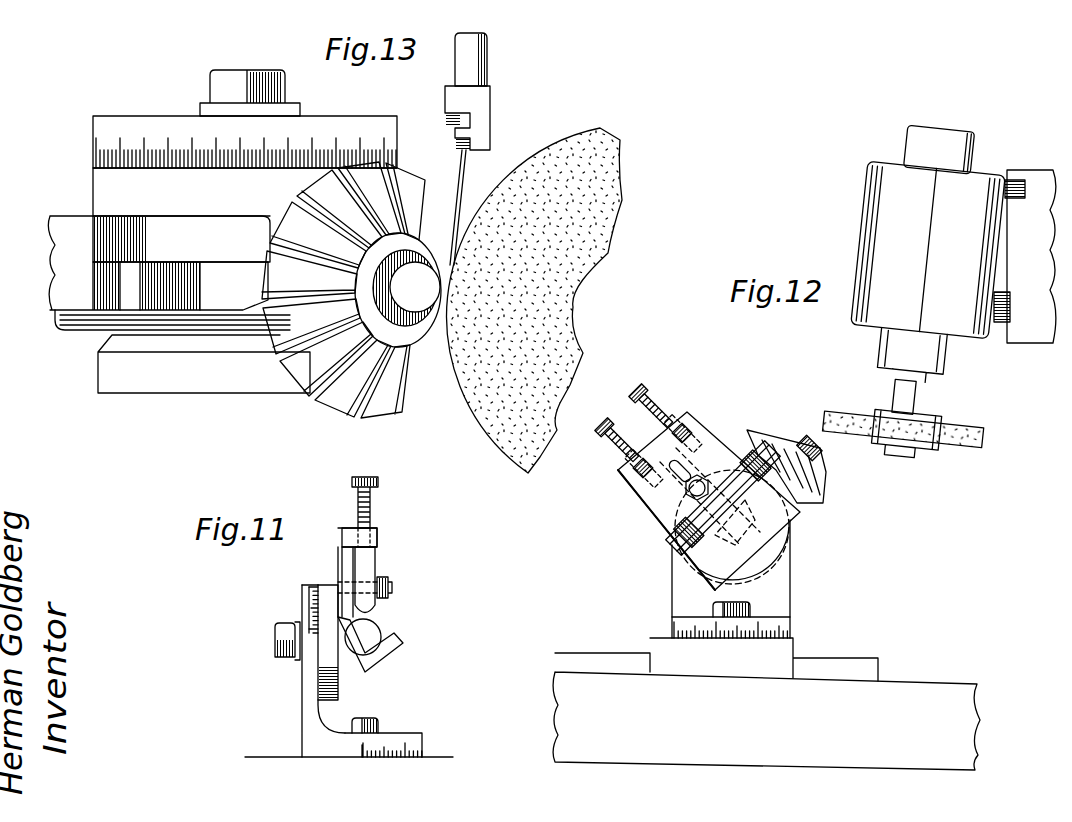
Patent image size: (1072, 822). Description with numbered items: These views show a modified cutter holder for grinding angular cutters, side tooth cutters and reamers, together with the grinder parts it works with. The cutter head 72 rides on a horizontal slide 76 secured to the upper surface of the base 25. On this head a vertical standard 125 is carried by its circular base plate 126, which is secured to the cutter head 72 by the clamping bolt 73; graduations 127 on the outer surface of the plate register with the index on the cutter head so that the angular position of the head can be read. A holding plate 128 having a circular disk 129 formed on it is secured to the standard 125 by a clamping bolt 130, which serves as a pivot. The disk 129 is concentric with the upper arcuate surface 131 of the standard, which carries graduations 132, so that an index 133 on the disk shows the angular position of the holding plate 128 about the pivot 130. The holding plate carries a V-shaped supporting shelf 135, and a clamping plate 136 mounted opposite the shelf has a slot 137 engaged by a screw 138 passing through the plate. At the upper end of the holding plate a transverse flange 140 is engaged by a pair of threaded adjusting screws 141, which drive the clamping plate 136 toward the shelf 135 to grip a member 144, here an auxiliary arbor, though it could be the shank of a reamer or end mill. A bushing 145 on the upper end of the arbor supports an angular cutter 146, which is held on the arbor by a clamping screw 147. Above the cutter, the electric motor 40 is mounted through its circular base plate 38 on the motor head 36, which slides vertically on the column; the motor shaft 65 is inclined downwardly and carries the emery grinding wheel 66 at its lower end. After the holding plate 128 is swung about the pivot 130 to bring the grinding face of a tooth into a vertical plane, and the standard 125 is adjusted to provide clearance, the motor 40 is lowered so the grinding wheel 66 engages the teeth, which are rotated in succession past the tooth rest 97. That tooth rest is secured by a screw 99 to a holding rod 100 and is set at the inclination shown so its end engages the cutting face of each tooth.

In FIG. 12, the base 25 is at (560, 704).
In FIG. 12, the motor head 36 is at (1022, 333).
In FIG. 12, the circular base plate 38 is at (1012, 183).
In FIG. 12, the electric motor 40 is at (870, 218).
In FIG. 12, the motor shaft 65 is at (918, 396).
In FIG. 13, the emery grinding wheel 66 is at (557, 154).
In FIG. 12, the emery grinding wheel 66 is at (860, 420).
In FIG. 11, the cutter head 72 is at (265, 760).
In FIG. 12, the cutter head 72 is at (783, 655).
In FIG. 11, the clamping screw 73 is at (373, 718).
In FIG. 12, the clamping screw 73 is at (755, 612).
In FIG. 12, the horizontal slide 76 is at (586, 658).
In FIG. 13, the tooth rest 97 is at (460, 181).
In FIG. 13, the screw 99 is at (448, 120).
In FIG. 13, the holding rod 100 is at (483, 59).
In FIG. 11, the vertical standard 125 is at (305, 697).
In FIG. 11, the circular base plate 126 is at (378, 735).
In FIG. 12, the circular base plate 126 is at (688, 618).
In FIG. 11, the graduations 127 is at (420, 745).
In FIG. 12, the graduations 127 is at (680, 636).
In FIG. 11, the holding plate 128 is at (341, 545).
In FIG. 13, the circular disk 129 is at (100, 187).
In FIG. 11, the circular disk 129 is at (320, 590).
In FIG. 12, the circular disk 129 is at (773, 557).
In FIG. 13, the clamping bolt 130 is at (237, 77).
In FIG. 11, the clamping bolt 130 is at (282, 636).
In FIG. 12, the clamping bolt 130 is at (778, 543).
In FIG. 13, the upper arcuate surface 131 is at (337, 125).
In FIG. 11, the upper arcuate surface 131 is at (308, 596).
In FIG. 13, the graduations 132 is at (165, 126).
In FIG. 11, the graduations 132 is at (308, 613).
In FIG. 11, the index 133 is at (332, 582).
In FIG. 13, the V-shaped supporting shelf 135 is at (121, 383).
In FIG. 11, the V-shaped supporting shelf 135 is at (398, 648).
In FIG. 12, the V-shaped supporting shelf 135 is at (765, 502).
In FIG. 13, the clamping plate 136 is at (220, 302).
In FIG. 11, the clamping plate 136 is at (372, 566).
In FIG. 12, the clamping plate 136 is at (646, 495).
In FIG. 12, the slot 137 is at (672, 480).
In FIG. 11, the screw 138 is at (388, 586).
In FIG. 12, the screw 138 is at (688, 498).
In FIG. 13, the transverse flange 140 is at (60, 302).
In FIG. 11, the transverse flange 140 is at (378, 538).
In FIG. 12, the transverse flange 140 is at (630, 466).
In FIG. 11, the threaded adjusting screws 141 is at (370, 505).
In FIG. 12, the threaded adjusting screws 141 is at (606, 420).
In FIG. 13, the member 144 is at (83, 328).
In FIG. 11, the member 144 is at (370, 633).
In FIG. 12, the member 144 is at (672, 555).
In FIG. 12, the bushing 145 is at (755, 456).
In FIG. 13, the angular cutter 146 is at (342, 405).
In FIG. 12, the angular cutter 146 is at (768, 428).
In FIG. 13, the clamping screw 147 is at (420, 308).
In FIG. 12, the clamping screw 147 is at (803, 438).